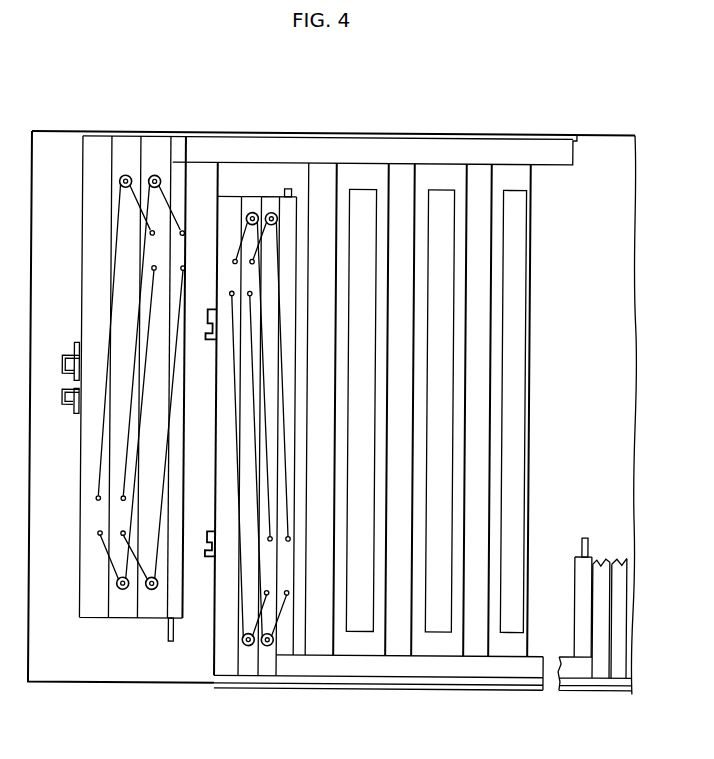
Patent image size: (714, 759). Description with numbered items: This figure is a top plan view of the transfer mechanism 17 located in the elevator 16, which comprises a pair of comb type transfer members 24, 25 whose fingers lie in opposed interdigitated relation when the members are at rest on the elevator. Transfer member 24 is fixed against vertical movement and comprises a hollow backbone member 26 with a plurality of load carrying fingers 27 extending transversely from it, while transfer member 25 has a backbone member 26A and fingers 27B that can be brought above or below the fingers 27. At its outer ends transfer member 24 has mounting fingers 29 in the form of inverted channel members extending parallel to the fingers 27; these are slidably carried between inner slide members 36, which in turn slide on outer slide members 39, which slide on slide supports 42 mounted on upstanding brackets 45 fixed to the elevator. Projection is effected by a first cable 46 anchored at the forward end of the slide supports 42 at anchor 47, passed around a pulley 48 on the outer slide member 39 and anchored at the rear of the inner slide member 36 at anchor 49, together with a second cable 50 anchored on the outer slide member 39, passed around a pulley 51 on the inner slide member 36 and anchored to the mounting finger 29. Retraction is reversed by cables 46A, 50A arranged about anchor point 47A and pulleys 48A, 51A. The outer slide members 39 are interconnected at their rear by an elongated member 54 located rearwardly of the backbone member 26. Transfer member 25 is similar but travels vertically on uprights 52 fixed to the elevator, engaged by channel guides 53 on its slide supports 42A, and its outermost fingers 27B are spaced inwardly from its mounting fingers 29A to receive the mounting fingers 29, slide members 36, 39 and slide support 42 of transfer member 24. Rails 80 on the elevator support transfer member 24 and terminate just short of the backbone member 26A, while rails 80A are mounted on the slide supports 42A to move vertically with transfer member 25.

The elevator 16 is at (600, 479).
The transfer mechanism 17 is at (88, 637).
The transfer member 24 is at (572, 696).
The transfer member 25 is at (587, 148).
The hollow backbone member 26 is at (482, 669).
The backbone member 26A is at (540, 151).
The load carrying fingers 27 is at (360, 353).
The fingers 27B is at (407, 437).
The mounting fingers 29 is at (290, 297).
The mounting fingers 29A is at (175, 477).
The inner slide members 36 is at (273, 200).
The outer slide members 39 is at (252, 200).
The slide supports 42 is at (228, 200).
The slide supports 42A is at (88, 527).
The upstanding brackets 45 is at (213, 332).
The first cable 46 is at (243, 240).
The cable 46A is at (232, 385).
The anchor 47 is at (234, 262).
The anchor point 47A is at (231, 292).
The pulley 48 is at (118, 589).
The pulley 48A is at (120, 179).
The anchor 49 is at (263, 570).
The second cable 50 is at (270, 227).
The cable 50A is at (256, 398).
The pulley 51 is at (156, 589).
The pulley 51A is at (157, 175).
The uprights 52 is at (68, 410).
The channel guides 53 is at (69, 353).
The elongated member 54 is at (472, 133).
The rails 80 is at (292, 190).
The rails 80A is at (177, 640).